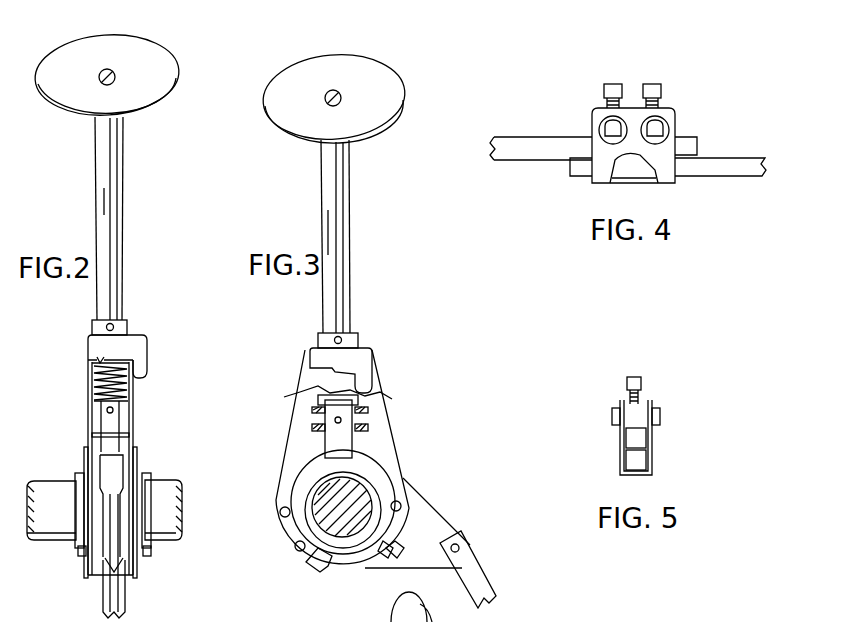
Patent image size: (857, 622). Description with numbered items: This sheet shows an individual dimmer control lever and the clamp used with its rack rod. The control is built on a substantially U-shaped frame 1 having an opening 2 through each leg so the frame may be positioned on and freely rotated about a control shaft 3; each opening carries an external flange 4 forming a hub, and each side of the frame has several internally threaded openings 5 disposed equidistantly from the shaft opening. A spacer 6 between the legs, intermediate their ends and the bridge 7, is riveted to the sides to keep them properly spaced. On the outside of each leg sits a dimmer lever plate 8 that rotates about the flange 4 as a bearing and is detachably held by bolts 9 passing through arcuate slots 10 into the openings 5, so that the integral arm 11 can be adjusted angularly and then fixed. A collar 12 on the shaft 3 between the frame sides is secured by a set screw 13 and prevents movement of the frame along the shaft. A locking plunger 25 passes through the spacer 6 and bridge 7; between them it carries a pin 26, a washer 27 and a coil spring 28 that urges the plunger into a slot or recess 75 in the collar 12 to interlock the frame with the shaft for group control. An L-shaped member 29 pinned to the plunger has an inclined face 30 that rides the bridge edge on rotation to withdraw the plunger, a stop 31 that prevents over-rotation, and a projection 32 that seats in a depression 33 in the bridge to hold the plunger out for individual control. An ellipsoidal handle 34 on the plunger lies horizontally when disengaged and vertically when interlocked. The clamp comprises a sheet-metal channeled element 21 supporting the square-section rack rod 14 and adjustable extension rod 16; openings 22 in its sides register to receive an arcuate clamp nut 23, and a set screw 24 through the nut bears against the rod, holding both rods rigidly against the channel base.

In FIG. 2, the U-shaped frame 1 is at (87, 373).
In FIG. 3, the U-shaped frame 1 is at (398, 432).
In FIG. 3, the opening 2 is at (315, 522).
In FIG. 2, the control shaft 3 is at (50, 482).
In FIG. 3, the control shaft 3 is at (340, 540).
In FIG. 2, the external flange 4 is at (78, 550).
In FIG. 3, the internally threaded opening 5 is at (280, 512).
In FIG. 2, the spacer 6 is at (130, 435).
In FIG. 2, the bridge 7 is at (96, 360).
In FIG. 2, the dimmer lever plate 8 is at (85, 450).
In FIG. 3, the bolt 9 is at (297, 551).
In FIG. 3, the arcuate slot 10 is at (322, 562).
In FIG. 3, the arm 11 is at (445, 514).
In FIG. 2, the collar 12 is at (103, 578).
In FIG. 3, the collar 12 is at (294, 478).
In FIG. 2, the set screw 13 is at (118, 574).
In FIG. 3, the set screw 13 is at (392, 560).
In FIG. 4, the rack rod 14 is at (733, 158).
In FIG. 5, the rack rod 14 is at (642, 458).
In FIG. 4, the adjustable extension rod 16 is at (504, 137).
In FIG. 5, the adjustable extension rod 16 is at (642, 437).
In FIG. 4, the channeled element 21 is at (675, 112).
In FIG. 5, the channeled element 21 is at (619, 447).
In FIG. 4, the opening 22 is at (642, 120).
In FIG. 5, the clamp nut 23 is at (661, 414).
In FIG. 4, the set screw 24 is at (652, 84).
In FIG. 5, the set screw 24 is at (643, 383).
In FIG. 2, the locking plunger 25 is at (123, 184).
In FIG. 3, the locking plunger 25 is at (351, 180).
In FIG. 2, the pin 26 is at (107, 410).
In FIG. 2, the washer 27 is at (127, 400).
In FIG. 2, the coil spring 28 is at (94, 388).
In FIG. 2, the L-shaped member 29 is at (128, 333).
In FIG. 3, the L-shaped member 29 is at (355, 357).
In FIG. 3, the inclined face 30 is at (330, 369).
In FIG. 3, the stop 31 is at (372, 387).
In FIG. 3, the projection 32 is at (330, 374).
In FIG. 2, the depression 33 is at (99, 359).
In FIG. 2, the handle 34 is at (176, 72).
In FIG. 3, the handle 34 is at (262, 97).
In FIG. 3, the slot or recess 75 is at (330, 461).